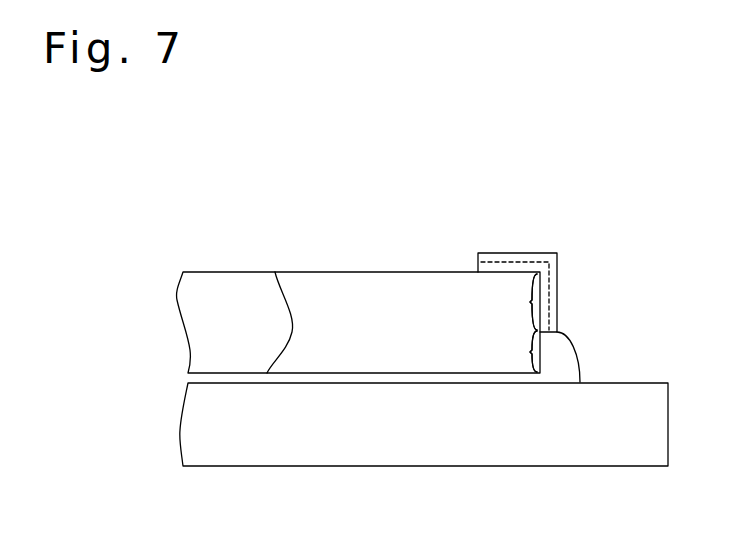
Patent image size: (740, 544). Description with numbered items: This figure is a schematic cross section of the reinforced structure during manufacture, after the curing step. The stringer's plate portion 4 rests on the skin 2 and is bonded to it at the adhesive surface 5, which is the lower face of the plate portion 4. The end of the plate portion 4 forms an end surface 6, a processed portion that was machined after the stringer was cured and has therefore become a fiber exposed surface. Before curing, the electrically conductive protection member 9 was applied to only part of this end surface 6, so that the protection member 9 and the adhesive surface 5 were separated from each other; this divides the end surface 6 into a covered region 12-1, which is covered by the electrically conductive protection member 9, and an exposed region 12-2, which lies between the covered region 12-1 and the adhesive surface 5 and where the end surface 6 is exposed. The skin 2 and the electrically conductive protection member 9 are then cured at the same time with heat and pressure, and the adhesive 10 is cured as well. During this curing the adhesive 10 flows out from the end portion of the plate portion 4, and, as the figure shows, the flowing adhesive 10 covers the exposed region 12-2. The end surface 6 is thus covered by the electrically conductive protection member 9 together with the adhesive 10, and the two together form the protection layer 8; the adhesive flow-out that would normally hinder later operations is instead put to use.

The skin 2 is at (608, 447).
The plate portion 4 is at (353, 290).
The adhesive surface 5 is at (275, 272).
The end surface 6 is at (490, 293).
The protection layer 8 is at (564, 317).
The electrically conductive protection member 9 is at (555, 294).
The adhesive 10 is at (590, 349).
The covered region 12-1 is at (515, 302).
The exposed region 12-2 is at (515, 351).